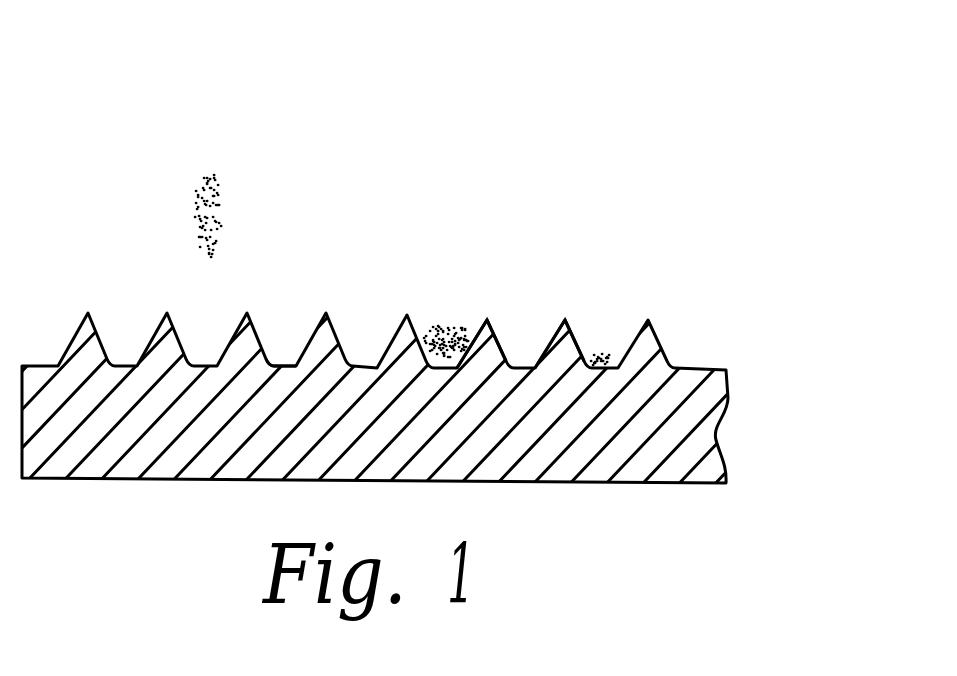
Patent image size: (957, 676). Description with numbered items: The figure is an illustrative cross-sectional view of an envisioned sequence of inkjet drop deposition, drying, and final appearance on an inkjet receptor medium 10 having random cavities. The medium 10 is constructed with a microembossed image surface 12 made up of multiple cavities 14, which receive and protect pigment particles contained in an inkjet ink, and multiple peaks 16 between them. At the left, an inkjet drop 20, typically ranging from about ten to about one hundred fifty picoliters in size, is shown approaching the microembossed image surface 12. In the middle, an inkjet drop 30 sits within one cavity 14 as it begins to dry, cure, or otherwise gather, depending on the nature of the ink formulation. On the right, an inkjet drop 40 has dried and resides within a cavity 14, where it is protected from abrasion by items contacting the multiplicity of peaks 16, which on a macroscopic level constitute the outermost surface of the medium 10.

The inkjet receptor medium 10 is at (750, 145).
The microembossed image surface 12 is at (663, 341).
The cavity 14 is at (290, 328).
The peak 16 is at (565, 317).
The inkjet drop 20 is at (190, 198).
The inkjet drop 30 is at (445, 323).
The inkjet drop 40 is at (605, 355).